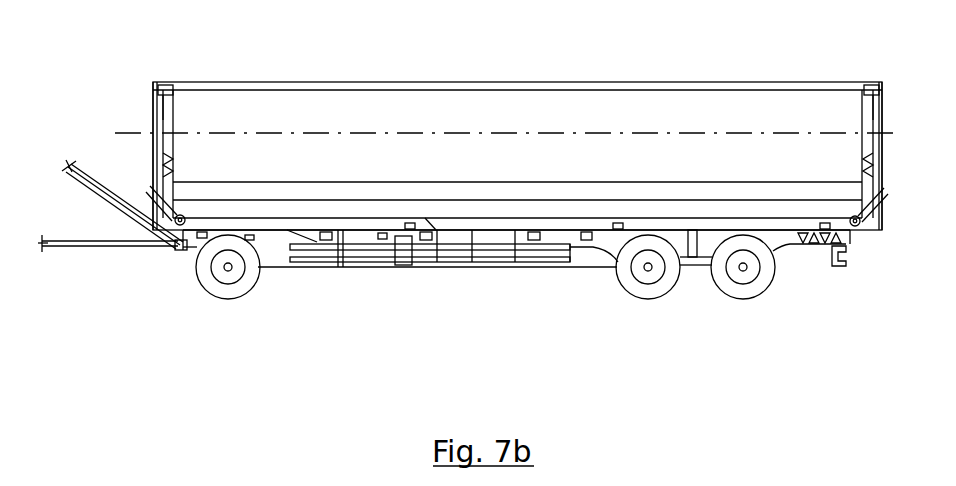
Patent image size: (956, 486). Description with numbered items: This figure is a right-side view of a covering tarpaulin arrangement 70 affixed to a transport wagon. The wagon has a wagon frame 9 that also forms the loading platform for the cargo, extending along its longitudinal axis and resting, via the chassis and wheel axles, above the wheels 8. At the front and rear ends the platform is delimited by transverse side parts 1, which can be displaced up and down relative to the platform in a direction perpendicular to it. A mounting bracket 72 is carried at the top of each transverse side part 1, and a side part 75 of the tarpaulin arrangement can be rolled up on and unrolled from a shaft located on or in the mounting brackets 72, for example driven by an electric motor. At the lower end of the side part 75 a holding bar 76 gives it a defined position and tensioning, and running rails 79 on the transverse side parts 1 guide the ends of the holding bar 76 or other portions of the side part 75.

The covering tarpaulin arrangement 70 is at (719, 72).
The mounting bracket 72 is at (180, 83).
The running rail 79 is at (168, 108).
The transverse side part 1 is at (153, 114).
The side part 75 is at (518, 121).
The holding bar 76 is at (733, 193).
The wagon frame 9 is at (541, 218).
The wheel 8 is at (229, 291).